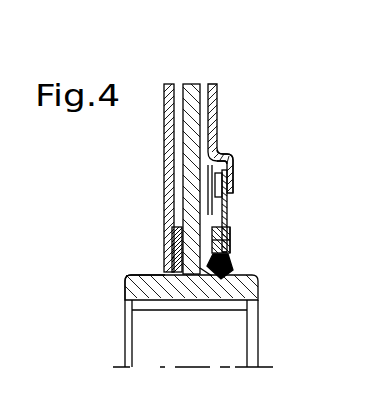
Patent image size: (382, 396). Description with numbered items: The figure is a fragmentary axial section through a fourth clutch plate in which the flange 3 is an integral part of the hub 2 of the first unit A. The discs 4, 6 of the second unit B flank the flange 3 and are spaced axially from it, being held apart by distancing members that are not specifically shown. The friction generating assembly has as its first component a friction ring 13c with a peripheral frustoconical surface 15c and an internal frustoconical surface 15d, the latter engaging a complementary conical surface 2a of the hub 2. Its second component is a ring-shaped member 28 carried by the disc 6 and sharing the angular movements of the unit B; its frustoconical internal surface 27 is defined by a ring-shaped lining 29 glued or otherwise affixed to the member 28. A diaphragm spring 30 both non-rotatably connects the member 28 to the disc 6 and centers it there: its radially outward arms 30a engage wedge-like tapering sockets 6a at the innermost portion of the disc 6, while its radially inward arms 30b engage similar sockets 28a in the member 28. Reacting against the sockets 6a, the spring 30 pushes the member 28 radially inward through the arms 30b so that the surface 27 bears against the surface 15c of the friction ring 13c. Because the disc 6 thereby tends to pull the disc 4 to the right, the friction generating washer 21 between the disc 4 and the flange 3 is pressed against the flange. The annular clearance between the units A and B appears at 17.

The second unit B is at (162, 86).
The first unit A is at (117, 330).
The hub 2 is at (128, 290).
The conical surface 2a is at (214, 224).
The flange 3 is at (193, 100).
The disc 4 is at (164, 133).
The disc 6 is at (216, 96).
The sockets 6a is at (223, 157).
The friction ring 13c is at (207, 258).
The peripheral frustoconical surface 15c is at (229, 248).
The internal frustoconical surface 15d is at (212, 262).
The annular clearance 17 is at (162, 273).
The friction generating washer 21 is at (172, 248).
The frustoconical internal surface 27 is at (217, 265).
The ring-shaped member 28 is at (234, 262).
The sockets 28a is at (236, 258).
The ring-shaped lining 29 is at (232, 270).
The diaphragm spring 30 is at (229, 197).
The arms 30a is at (233, 172).
The arms 30b is at (233, 233).